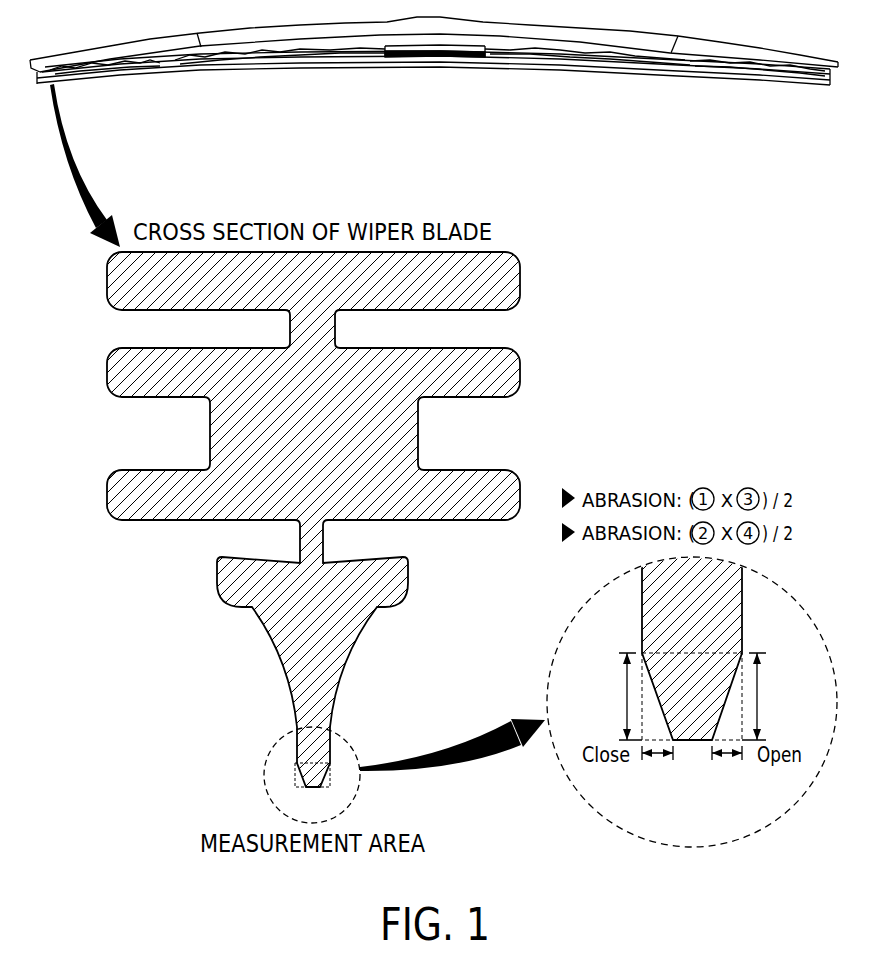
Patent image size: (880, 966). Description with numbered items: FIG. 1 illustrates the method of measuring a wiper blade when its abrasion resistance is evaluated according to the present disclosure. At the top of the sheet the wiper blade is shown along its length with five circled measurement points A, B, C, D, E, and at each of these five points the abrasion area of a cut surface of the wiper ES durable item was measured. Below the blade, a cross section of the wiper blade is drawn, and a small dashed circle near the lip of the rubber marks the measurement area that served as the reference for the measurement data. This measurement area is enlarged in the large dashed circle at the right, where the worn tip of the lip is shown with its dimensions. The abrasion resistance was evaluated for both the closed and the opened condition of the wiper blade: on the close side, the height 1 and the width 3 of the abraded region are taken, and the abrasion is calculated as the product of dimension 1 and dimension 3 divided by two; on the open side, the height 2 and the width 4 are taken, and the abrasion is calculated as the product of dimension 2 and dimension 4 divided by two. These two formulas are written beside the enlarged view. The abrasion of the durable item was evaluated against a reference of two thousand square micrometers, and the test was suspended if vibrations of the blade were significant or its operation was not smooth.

The measurement point A is at (118, 84).
The measurement point B is at (280, 78).
The measurement point C is at (435, 77).
The measurement point D is at (587, 78).
The measurement point E is at (757, 84).
The closed-side abrasion dimension 1 is at (619, 696).
The opened-side abrasion dimension 2 is at (764, 696).
The closed-side abrasion dimension 3 is at (657, 765).
The opened-side abrasion dimension 4 is at (727, 765).